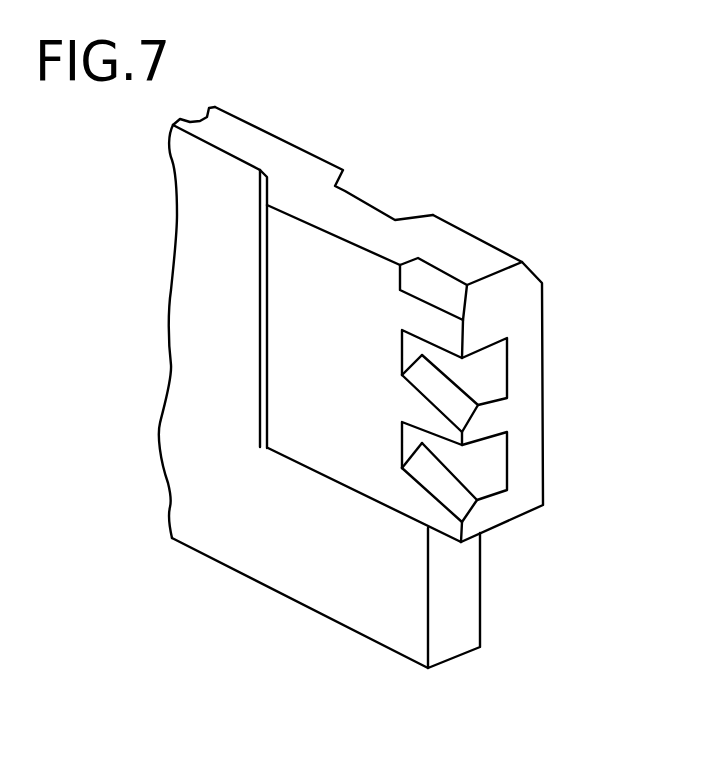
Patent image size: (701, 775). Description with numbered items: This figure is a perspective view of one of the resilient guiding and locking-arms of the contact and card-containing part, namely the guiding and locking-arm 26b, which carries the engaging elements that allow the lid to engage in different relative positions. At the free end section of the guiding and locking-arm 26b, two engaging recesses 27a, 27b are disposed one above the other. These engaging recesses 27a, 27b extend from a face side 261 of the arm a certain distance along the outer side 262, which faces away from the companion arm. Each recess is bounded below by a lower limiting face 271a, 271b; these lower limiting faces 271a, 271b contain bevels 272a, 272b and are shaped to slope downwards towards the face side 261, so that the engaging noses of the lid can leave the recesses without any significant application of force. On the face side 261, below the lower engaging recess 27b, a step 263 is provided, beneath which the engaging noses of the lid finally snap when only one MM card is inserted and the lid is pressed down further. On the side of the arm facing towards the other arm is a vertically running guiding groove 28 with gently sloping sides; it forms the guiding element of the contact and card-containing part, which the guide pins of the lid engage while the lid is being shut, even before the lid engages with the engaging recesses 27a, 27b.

The guiding and locking-arm 26b is at (193, 335).
The guiding groove 28 is at (383, 200).
The outer side 262 is at (310, 250).
The face side 261 is at (522, 318).
The step 263 is at (483, 533).
The upper engaging recess 27a is at (512, 367).
The lower engaging recess 27b is at (500, 462).
The lower limiting face of upper engaging recess 271a is at (480, 393).
The lower limiting face of lower engaging recess 271b is at (495, 453).
The bevel of upper engaging recess 272a is at (432, 388).
The bevel of lower engaging recess 272b is at (435, 486).